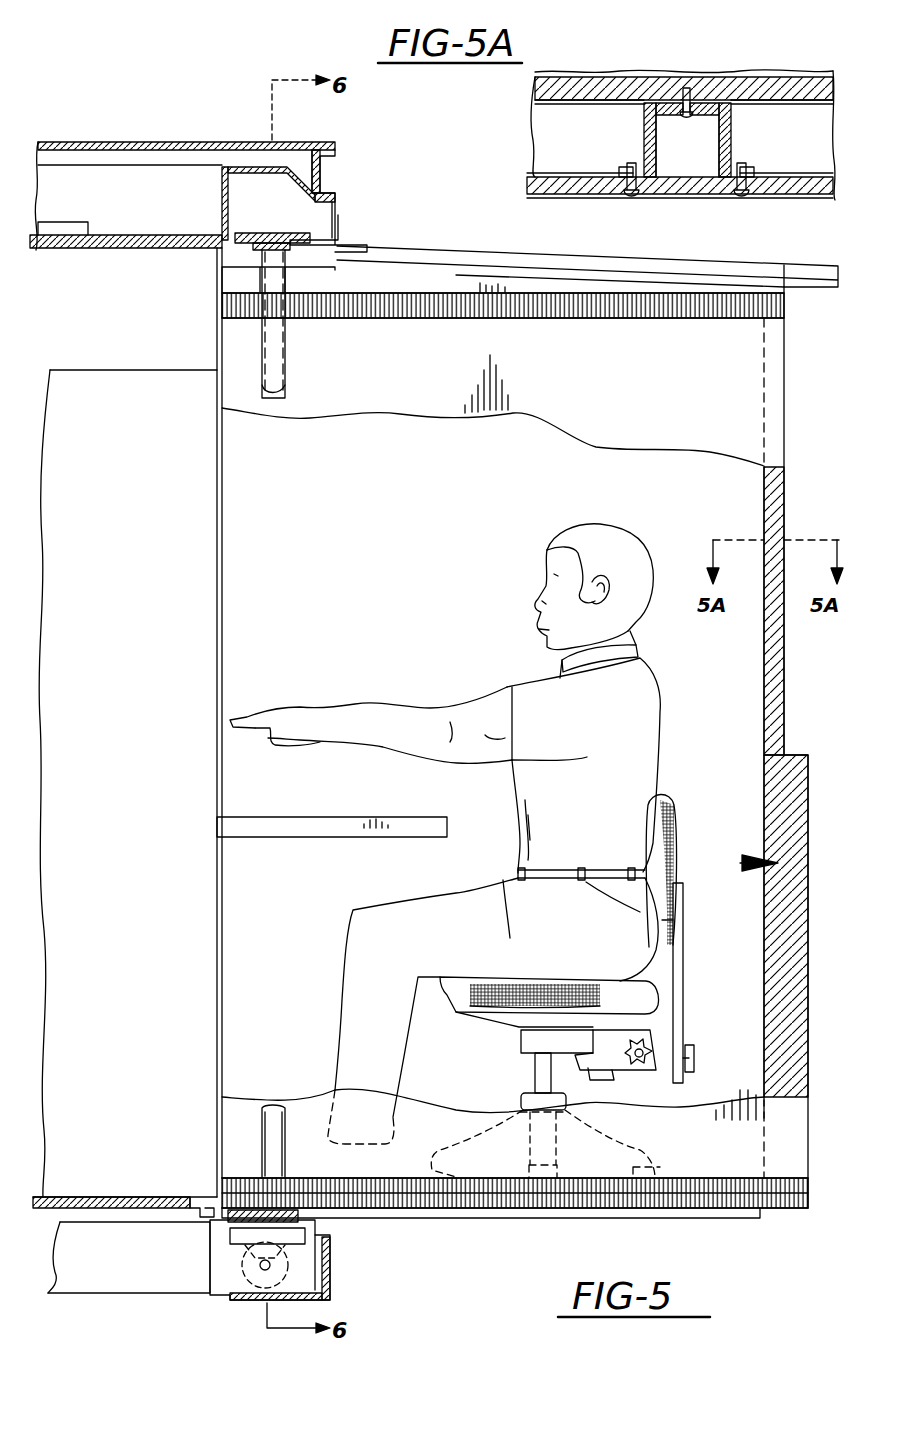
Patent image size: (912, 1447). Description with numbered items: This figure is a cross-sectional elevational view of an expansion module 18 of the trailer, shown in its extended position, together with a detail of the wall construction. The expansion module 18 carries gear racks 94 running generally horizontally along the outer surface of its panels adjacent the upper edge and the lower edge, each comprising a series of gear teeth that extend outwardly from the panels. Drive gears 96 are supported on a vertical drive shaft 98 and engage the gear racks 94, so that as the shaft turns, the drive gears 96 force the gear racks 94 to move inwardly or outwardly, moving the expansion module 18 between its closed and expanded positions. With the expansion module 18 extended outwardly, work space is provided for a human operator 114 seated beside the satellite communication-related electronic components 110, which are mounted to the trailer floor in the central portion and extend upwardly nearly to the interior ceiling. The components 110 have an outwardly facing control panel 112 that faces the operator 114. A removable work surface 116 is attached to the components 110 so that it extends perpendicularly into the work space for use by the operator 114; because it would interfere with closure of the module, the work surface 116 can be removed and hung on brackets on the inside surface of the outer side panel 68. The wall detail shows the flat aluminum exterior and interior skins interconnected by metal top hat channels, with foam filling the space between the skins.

The expansion module 18 is at (740, 863).
The outer side panel 68 is at (775, 675).
The gear rack 94 is at (620, 320).
The drive gear 96 is at (292, 328).
The vertical drive shaft 98 is at (290, 370).
The satellite communication-related electronic components 110 is at (135, 716).
The control panel 112 is at (228, 568).
The human operator 114 is at (636, 707).
The removable work surface 116 is at (305, 828).